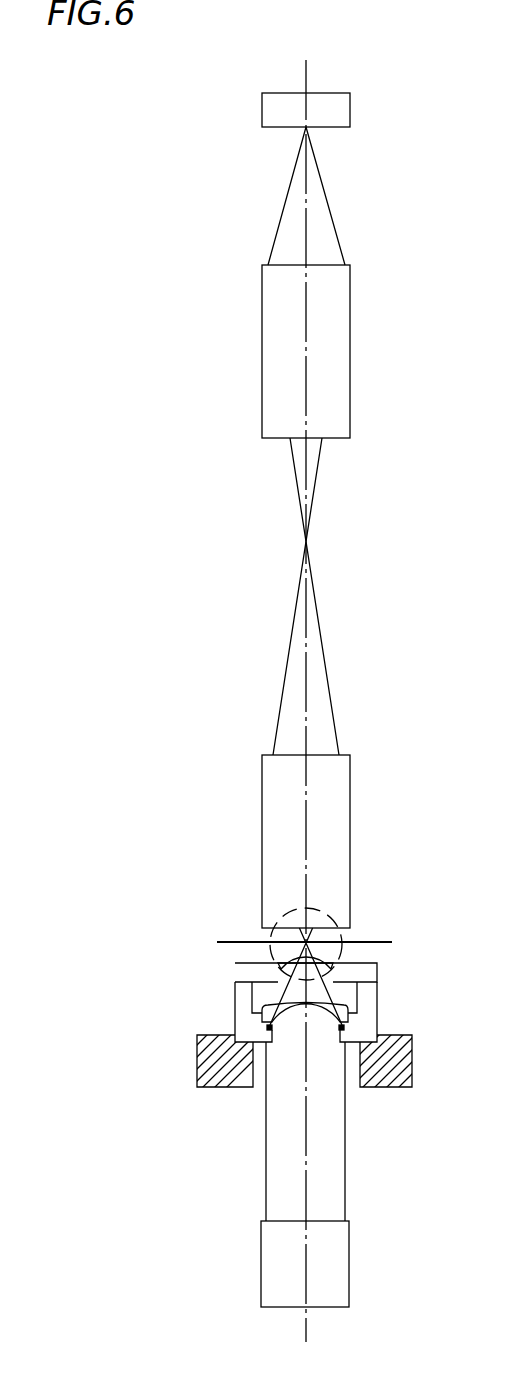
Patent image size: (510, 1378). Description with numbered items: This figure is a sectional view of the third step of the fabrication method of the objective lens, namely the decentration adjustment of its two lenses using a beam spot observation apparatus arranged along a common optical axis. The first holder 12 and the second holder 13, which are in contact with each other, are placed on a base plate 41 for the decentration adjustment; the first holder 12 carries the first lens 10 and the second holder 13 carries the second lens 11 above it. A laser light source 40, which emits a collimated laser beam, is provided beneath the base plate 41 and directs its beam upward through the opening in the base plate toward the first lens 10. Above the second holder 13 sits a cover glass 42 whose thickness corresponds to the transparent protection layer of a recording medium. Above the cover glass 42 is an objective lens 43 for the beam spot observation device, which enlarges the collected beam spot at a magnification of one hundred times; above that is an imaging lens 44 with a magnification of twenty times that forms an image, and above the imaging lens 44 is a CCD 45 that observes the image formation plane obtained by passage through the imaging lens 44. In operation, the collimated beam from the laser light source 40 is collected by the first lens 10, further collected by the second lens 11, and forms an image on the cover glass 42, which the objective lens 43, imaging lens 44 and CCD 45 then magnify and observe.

The first lens 10 is at (348, 1013).
The second lens 11 is at (286, 962).
The first holder 12 is at (367, 1000).
The second holder 13 is at (367, 972).
The laser light source 40 is at (349, 1262).
The base plate 41 is at (390, 1066).
The cover glass 42 is at (229, 942).
The objective lens for beam spot observation device 43 is at (350, 810).
The imaging lens 44 is at (350, 346).
The CCD 45 is at (350, 110).